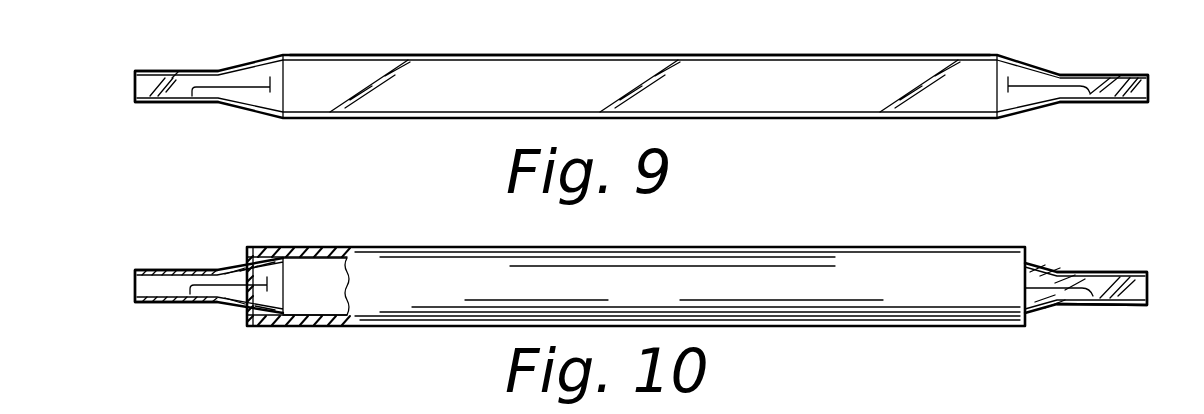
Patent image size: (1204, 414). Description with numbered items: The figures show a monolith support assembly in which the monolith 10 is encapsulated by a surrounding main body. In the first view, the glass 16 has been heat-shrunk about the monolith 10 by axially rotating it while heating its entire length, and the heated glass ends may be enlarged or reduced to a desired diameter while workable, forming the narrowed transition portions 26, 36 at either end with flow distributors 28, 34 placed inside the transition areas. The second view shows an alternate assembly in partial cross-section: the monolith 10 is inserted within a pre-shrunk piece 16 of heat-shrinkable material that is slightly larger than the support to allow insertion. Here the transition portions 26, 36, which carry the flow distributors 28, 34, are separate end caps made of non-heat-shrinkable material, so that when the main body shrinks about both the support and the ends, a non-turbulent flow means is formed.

In FIG. 9, the monolith 10 is at (555, 98).
In FIG. 10, the monolith 10 is at (330, 296).
In FIG. 9, the pre-shrunk piece 16 is at (752, 55).
In FIG. 10, the pre-shrunk piece 16 is at (658, 298).
In FIG. 9, the transition portion 26 is at (163, 105).
In FIG. 10, the transition portion 26 is at (175, 270).
In FIG. 9, the flow distributor 28 is at (213, 88).
In FIG. 10, the flow distributor 28 is at (213, 296).
In FIG. 9, the flow distributor 34 is at (1026, 83).
In FIG. 10, the flow distributor 34 is at (1073, 285).
In FIG. 9, the transition portion 36 is at (1122, 72).
In FIG. 10, the transition portion 36 is at (1093, 306).